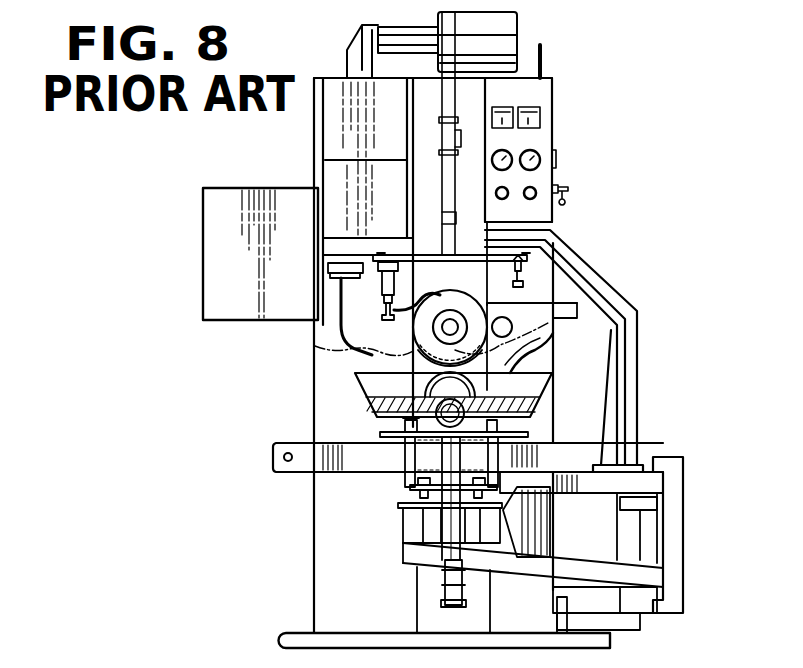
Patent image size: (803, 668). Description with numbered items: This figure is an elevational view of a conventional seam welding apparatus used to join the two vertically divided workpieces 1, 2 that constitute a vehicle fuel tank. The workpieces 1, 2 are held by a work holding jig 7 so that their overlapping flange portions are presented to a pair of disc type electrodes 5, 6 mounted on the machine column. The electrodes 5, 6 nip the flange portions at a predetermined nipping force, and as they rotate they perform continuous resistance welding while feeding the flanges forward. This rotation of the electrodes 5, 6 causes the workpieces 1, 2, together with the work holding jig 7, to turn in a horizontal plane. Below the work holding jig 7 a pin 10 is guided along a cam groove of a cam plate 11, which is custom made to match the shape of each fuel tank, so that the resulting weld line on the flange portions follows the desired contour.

The workpiece 1 is at (315, 345).
The workpiece 2 is at (367, 385).
The disc type electrode 5 is at (464, 304).
The disc type electrode 6 is at (548, 350).
The work holding jig 7 is at (543, 403).
The pin 10 is at (382, 443).
The cam plate 11 is at (310, 455).